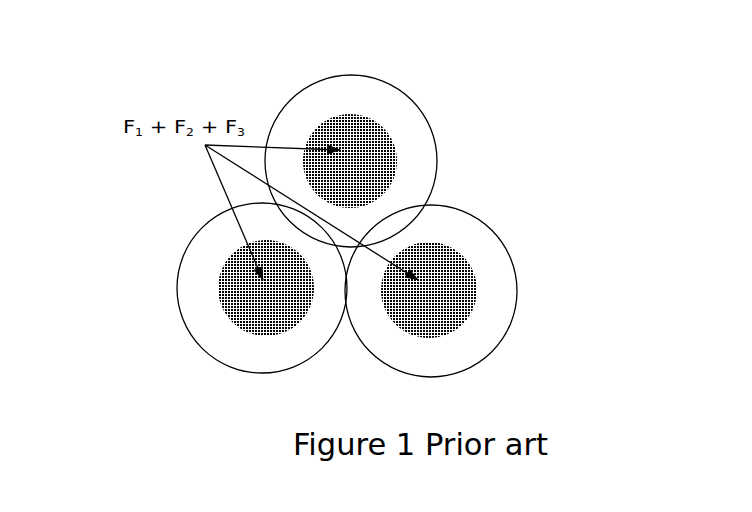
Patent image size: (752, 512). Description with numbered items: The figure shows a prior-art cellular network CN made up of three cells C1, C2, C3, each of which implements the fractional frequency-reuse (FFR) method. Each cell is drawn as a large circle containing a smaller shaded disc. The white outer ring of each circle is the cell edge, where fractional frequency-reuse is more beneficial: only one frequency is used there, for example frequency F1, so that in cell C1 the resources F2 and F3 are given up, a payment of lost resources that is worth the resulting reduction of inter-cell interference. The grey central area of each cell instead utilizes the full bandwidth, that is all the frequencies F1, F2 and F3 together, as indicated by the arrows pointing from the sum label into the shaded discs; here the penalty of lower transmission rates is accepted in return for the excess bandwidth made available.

The cell C1 is at (298, 80).
The cell C2 is at (157, 315).
The cell C3 is at (533, 267).
The cellular network CN is at (527, 52).
The frequency F1 is at (350, 150).
The frequency F2 is at (266, 276).
The frequency F3 is at (429, 279).